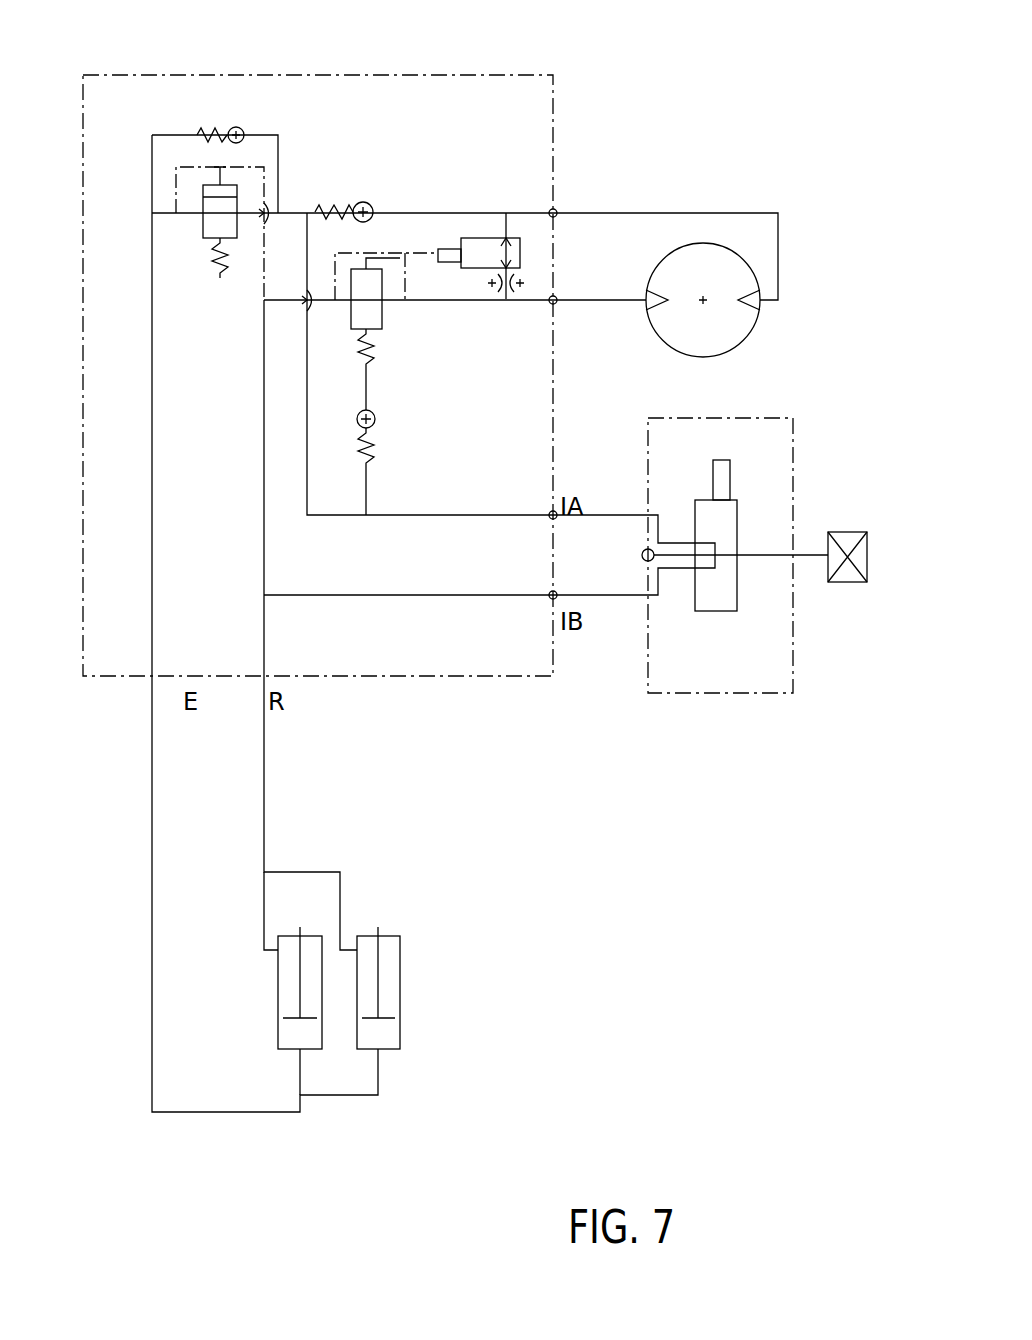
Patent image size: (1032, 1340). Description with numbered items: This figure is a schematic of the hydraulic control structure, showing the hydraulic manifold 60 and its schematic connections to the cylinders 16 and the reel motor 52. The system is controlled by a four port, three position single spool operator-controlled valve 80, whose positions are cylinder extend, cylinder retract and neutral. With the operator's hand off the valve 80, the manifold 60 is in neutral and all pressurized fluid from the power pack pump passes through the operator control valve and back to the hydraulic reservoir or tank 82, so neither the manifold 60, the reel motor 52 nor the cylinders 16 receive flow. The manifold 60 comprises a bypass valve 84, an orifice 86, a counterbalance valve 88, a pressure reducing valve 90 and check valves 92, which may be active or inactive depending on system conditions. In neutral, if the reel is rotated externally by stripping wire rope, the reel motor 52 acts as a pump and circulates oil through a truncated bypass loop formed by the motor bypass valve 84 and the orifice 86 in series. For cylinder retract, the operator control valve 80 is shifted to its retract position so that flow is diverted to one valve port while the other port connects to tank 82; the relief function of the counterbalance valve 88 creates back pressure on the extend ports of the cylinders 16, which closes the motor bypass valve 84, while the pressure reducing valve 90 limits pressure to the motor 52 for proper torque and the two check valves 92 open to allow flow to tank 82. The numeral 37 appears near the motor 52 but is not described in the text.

The hydraulic manifold 60 is at (505, 75).
The counterbalance valve 88 is at (203, 228).
The check valves 92 is at (360, 202).
The pressure reducing valve 90 is at (382, 318).
The bypass valve 84 is at (485, 237).
The orifice 86 is at (513, 280).
The reel motor 52 is at (748, 263).
The drive shaft 37 is at (796, 317).
The operator-controlled valve 80 is at (738, 542).
The tank 82 is at (838, 582).
The cylinders 16 is at (400, 992).